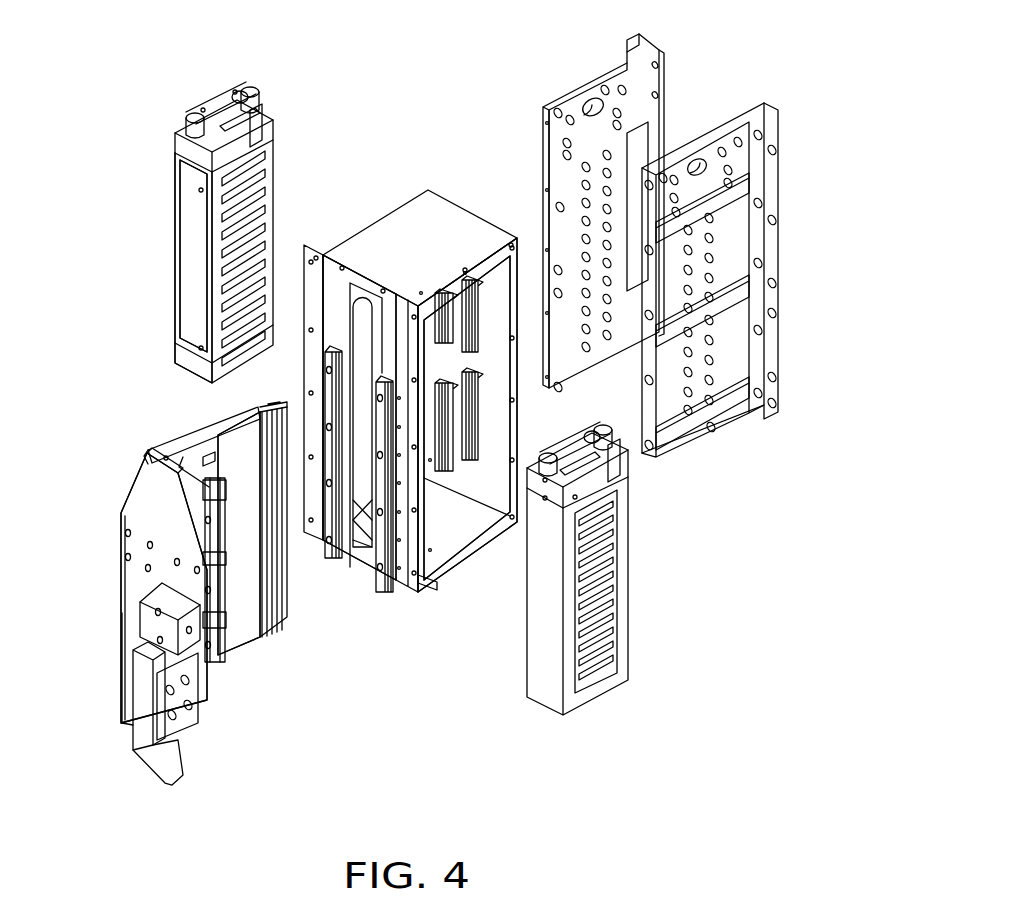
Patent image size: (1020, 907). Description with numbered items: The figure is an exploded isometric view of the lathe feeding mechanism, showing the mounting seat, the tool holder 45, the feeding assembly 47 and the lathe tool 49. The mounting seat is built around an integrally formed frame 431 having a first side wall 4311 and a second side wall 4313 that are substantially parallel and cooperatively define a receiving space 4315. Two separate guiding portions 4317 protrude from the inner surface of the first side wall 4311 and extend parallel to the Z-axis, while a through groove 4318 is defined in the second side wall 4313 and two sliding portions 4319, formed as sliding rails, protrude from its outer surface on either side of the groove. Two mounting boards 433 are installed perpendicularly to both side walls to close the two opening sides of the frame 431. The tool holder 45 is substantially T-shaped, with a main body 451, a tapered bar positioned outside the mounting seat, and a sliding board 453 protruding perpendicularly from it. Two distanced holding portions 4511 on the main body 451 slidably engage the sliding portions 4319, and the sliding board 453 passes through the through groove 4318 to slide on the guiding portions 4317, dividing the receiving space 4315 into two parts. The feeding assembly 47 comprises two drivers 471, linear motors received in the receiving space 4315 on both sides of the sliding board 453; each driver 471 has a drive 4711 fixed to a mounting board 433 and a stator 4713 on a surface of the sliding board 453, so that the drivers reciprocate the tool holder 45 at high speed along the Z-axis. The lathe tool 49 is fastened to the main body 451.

The feeding assembly 47 is at (207, 88).
The driver 471 is at (100, 296).
The drive 4711 is at (187, 317).
The stator 4713 is at (238, 443).
The tool holder 45 is at (130, 410).
The main body 451 is at (148, 488).
The sliding board 453 is at (193, 448).
The holding portion 4511 is at (226, 686).
The lathe tool 49 is at (153, 770).
The frame 431 is at (427, 210).
The first side wall 4311 is at (494, 395).
The second side wall 4313 is at (400, 472).
The receiving space 4315 is at (443, 510).
The guiding portion 4317 is at (470, 285).
The through groove 4318 is at (367, 510).
The sliding portion 4319 is at (378, 575).
The mounting board 433 is at (617, 70).